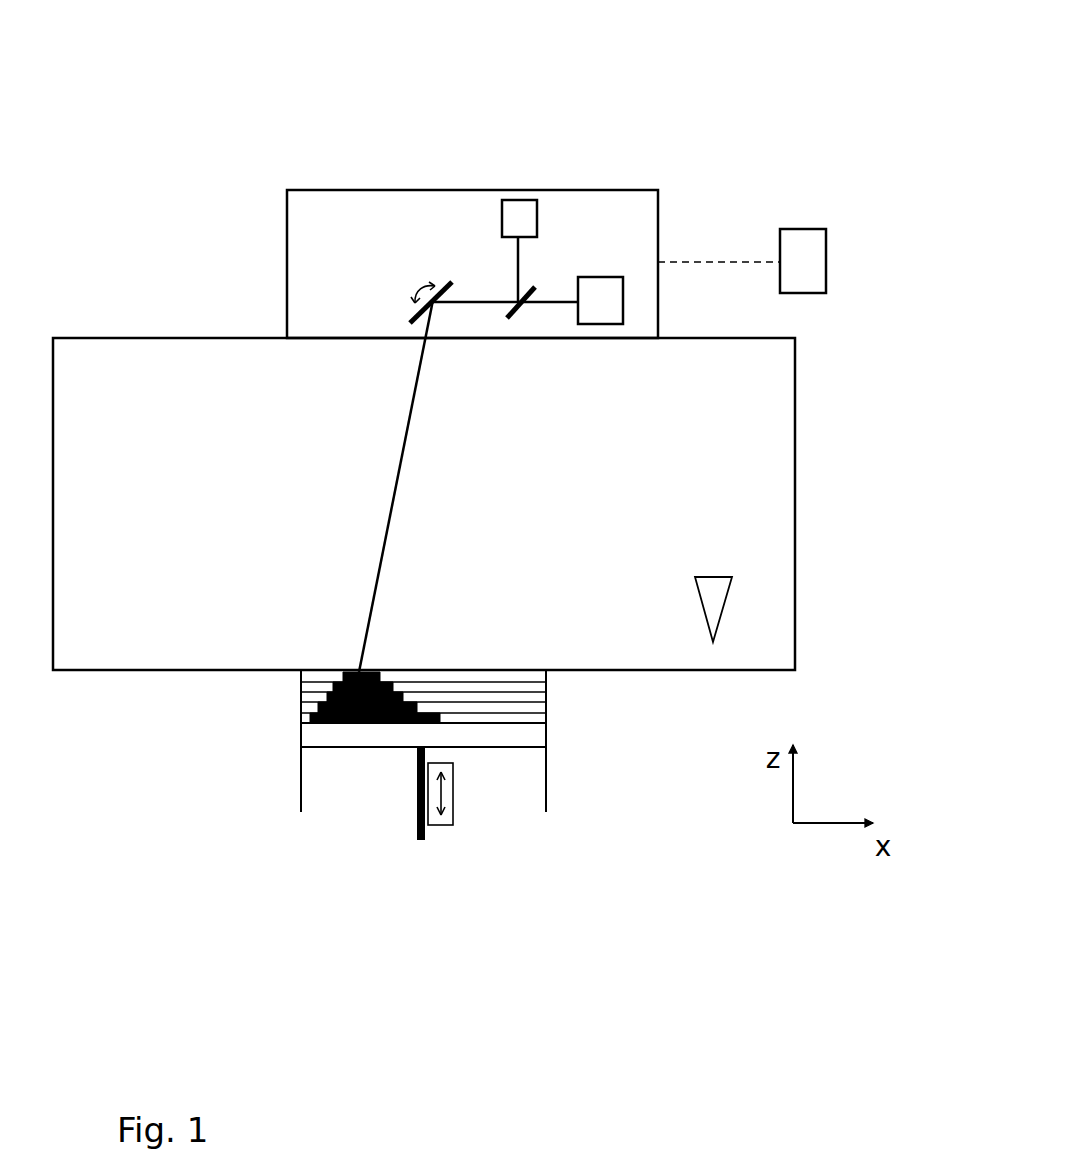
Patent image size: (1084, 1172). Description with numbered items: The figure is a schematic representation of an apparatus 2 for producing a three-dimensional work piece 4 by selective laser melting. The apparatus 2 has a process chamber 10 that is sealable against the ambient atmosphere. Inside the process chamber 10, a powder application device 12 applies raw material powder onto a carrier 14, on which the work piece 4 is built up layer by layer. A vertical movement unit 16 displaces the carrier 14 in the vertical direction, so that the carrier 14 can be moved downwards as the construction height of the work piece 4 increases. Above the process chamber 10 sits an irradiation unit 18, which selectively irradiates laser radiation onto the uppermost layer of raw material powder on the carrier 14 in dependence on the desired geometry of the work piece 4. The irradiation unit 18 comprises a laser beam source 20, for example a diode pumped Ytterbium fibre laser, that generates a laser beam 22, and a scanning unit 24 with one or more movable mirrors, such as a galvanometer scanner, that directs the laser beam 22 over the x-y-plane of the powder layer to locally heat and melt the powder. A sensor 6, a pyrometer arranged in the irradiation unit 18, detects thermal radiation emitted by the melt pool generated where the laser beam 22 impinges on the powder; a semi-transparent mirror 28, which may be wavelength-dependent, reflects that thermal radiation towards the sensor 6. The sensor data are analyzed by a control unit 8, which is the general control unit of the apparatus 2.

The apparatus 2 is at (657, 137).
The work piece 4 is at (343, 723).
The sensor 6 is at (517, 200).
The control unit 8 is at (820, 229).
The process chamber 10 is at (782, 378).
The powder application device 12 is at (710, 577).
The carrier 14 is at (495, 747).
The vertical movement unit 16 is at (443, 825).
The irradiation unit 18 is at (287, 233).
The laser beam source 20 is at (605, 277).
The laser beam 22 is at (390, 503).
The scanning unit 24 is at (443, 277).
The semi-transparent mirror 28 is at (521, 314).